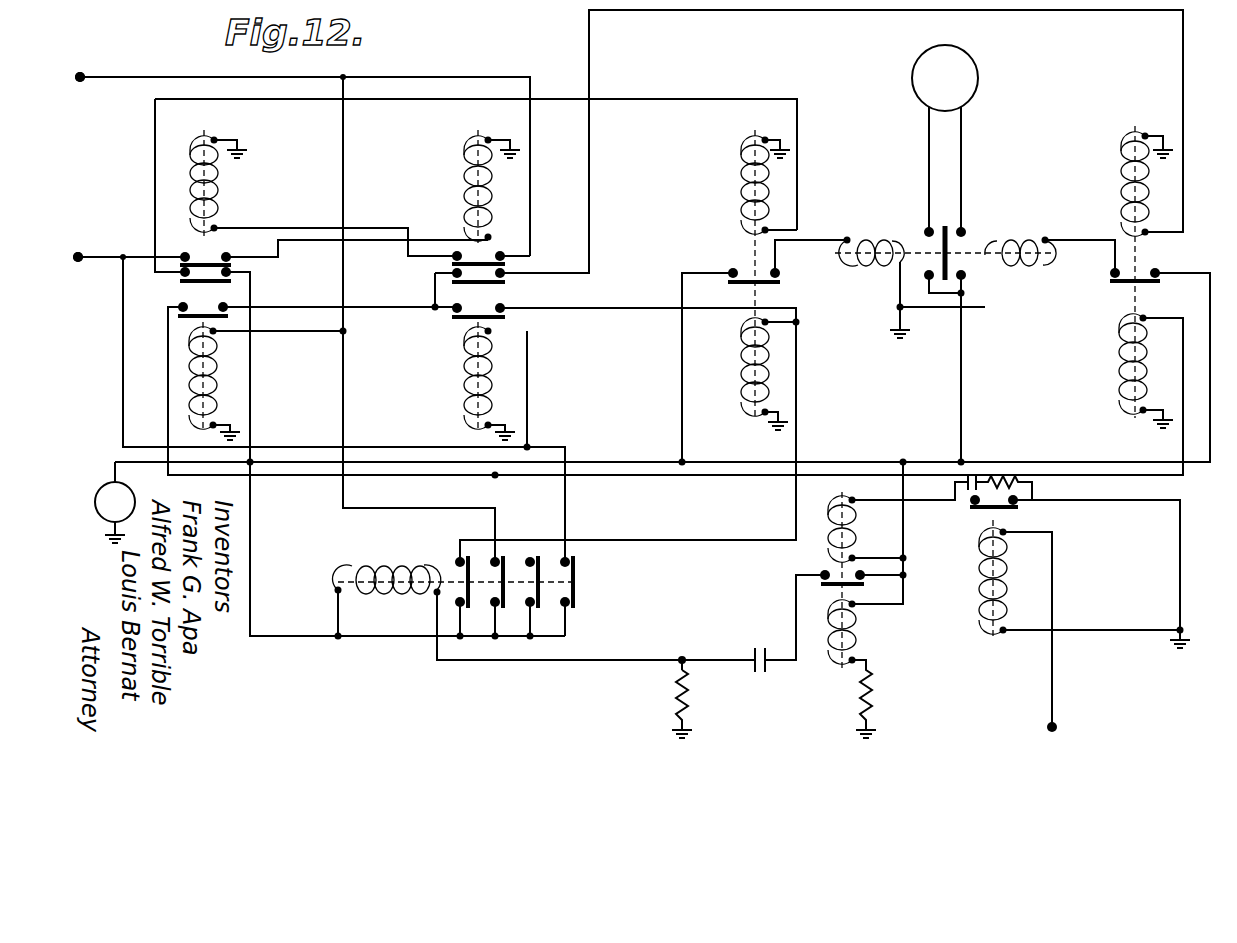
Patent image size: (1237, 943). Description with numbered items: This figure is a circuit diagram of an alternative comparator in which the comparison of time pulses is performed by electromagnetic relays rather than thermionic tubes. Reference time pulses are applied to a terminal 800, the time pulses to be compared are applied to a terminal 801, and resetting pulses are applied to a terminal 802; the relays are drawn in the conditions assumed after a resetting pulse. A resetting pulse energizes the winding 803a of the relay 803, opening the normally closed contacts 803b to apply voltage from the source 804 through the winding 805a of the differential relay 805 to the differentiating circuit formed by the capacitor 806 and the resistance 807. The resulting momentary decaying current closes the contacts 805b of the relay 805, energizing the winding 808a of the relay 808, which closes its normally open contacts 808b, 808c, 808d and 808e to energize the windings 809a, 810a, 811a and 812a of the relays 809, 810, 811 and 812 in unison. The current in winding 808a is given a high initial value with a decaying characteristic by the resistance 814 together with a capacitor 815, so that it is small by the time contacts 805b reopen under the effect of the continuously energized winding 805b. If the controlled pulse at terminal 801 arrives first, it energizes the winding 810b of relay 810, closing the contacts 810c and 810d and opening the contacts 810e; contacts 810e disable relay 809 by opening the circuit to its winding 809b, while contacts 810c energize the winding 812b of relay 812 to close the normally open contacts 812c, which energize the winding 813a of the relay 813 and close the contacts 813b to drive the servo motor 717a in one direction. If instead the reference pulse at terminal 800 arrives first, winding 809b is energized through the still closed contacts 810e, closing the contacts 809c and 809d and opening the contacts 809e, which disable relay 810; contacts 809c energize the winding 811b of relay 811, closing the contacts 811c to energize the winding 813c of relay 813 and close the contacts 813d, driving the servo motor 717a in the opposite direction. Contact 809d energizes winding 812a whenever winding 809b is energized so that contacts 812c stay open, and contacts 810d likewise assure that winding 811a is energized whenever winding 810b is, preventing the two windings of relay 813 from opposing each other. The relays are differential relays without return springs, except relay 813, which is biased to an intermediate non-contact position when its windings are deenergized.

The terminal 800 is at (80, 84).
The terminal 801 is at (78, 264).
The terminal 802 is at (1046, 730).
The relay 803 is at (1006, 575).
The winding 803a is at (978, 574).
The normally closed contacts 803b is at (1032, 516).
The source 804 is at (96, 480).
The differential relay 805 is at (829, 611).
The winding 805a is at (828, 538).
The contacts 805b is at (866, 626).
The capacitor 806 is at (980, 478).
The resistance 807 is at (1012, 478).
The relay 808 is at (484, 551).
The winding 808a is at (386, 578).
The normally open contacts 808b is at (451, 540).
The normally open contacts 808c is at (508, 508).
The normally open contacts 808d is at (568, 528).
The normally open contacts 808e is at (586, 552).
The relay 809 is at (241, 281).
The winding 809a is at (254, 383).
The winding 809b is at (232, 198).
The contacts 809c is at (250, 277).
The contact 809d is at (205, 307).
The contacts 809e is at (242, 246).
The relay 810 is at (492, 281).
The winding 810a is at (463, 376).
The winding 810b is at (464, 184).
The contacts 810c is at (518, 282).
The contacts 810d is at (505, 319).
The contacts 810e is at (536, 242).
The relay 811 is at (752, 275).
The winding 811a is at (738, 362).
The winding 811b is at (734, 185).
The contacts 811c is at (776, 277).
The relay 812 is at (1147, 272).
The winding 812a is at (1118, 360).
The winding 812b is at (1116, 184).
The normally open contacts 812c is at (1184, 254).
The relay 813 is at (946, 249).
The winding 813a is at (1034, 224).
The contacts 813b is at (982, 214).
The winding 813c is at (866, 268).
The contacts 813d is at (908, 220).
The resistance 814 is at (698, 696).
The capacitor 815 is at (768, 648).
The servo motor 717a is at (978, 70).